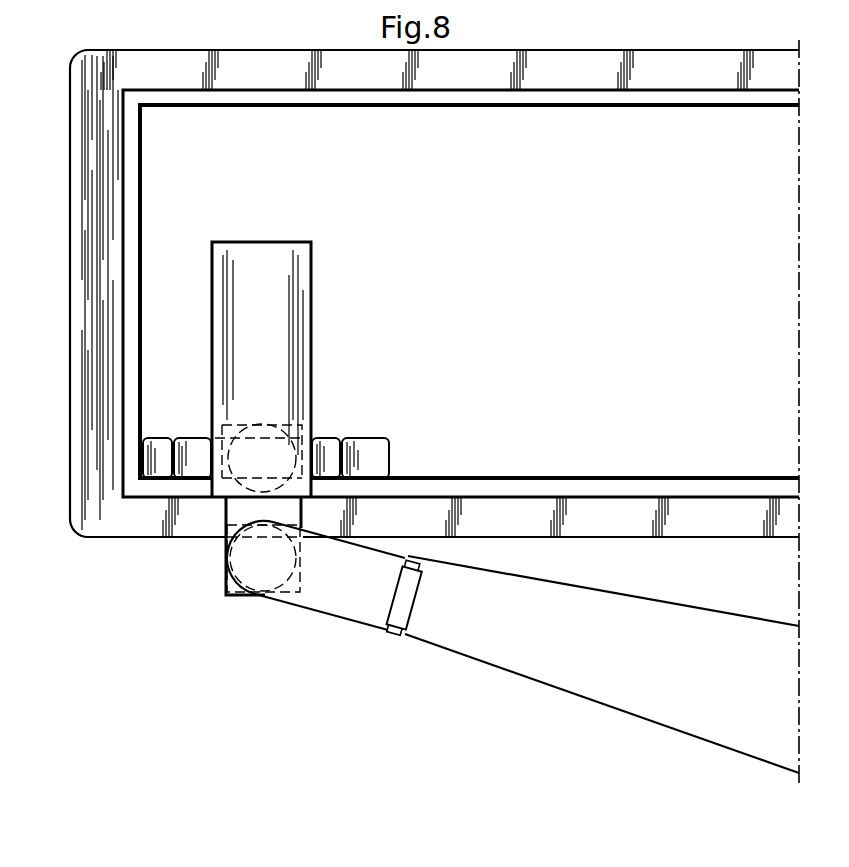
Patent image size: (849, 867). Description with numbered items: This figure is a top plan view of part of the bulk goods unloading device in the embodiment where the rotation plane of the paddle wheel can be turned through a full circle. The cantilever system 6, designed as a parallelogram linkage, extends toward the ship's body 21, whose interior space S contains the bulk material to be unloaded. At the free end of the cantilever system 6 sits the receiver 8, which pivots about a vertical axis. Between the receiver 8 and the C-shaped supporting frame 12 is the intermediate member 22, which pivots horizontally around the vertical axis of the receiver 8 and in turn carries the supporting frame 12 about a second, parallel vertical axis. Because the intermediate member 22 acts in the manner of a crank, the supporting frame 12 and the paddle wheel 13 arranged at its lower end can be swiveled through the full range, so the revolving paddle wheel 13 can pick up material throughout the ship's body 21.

The ship's body 21 is at (97, 203).
The interior space S is at (582, 276).
The C-shaped supporting frame 12 is at (271, 317).
The paddle wheel 13 is at (357, 453).
The intermediate member 22 is at (235, 513).
The receiver 8 is at (333, 585).
The cantilever system 6 is at (565, 672).